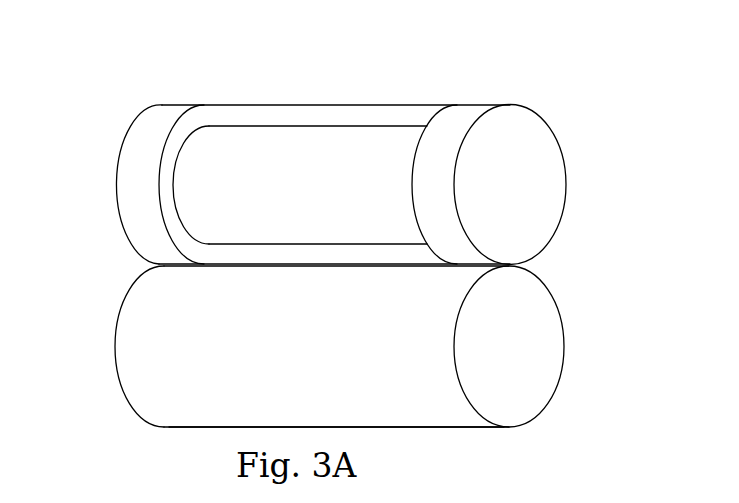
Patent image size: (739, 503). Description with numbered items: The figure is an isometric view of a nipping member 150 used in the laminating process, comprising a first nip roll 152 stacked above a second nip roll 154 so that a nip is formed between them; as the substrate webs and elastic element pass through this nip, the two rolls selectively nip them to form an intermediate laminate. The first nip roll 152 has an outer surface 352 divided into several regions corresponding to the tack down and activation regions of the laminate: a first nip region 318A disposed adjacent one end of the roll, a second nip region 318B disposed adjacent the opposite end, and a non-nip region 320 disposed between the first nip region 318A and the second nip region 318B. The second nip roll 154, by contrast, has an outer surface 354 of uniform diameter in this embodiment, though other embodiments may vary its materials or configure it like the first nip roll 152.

The nipping member 150 is at (549, 71).
The first nip roll 152 is at (343, 153).
The second nip roll 154 is at (540, 348).
The first nip region 318A is at (140, 133).
The second nip region 318B is at (460, 118).
The non-nip region 320 is at (285, 140).
The outer surface 352 is at (162, 113).
The outer surface 354 is at (435, 407).